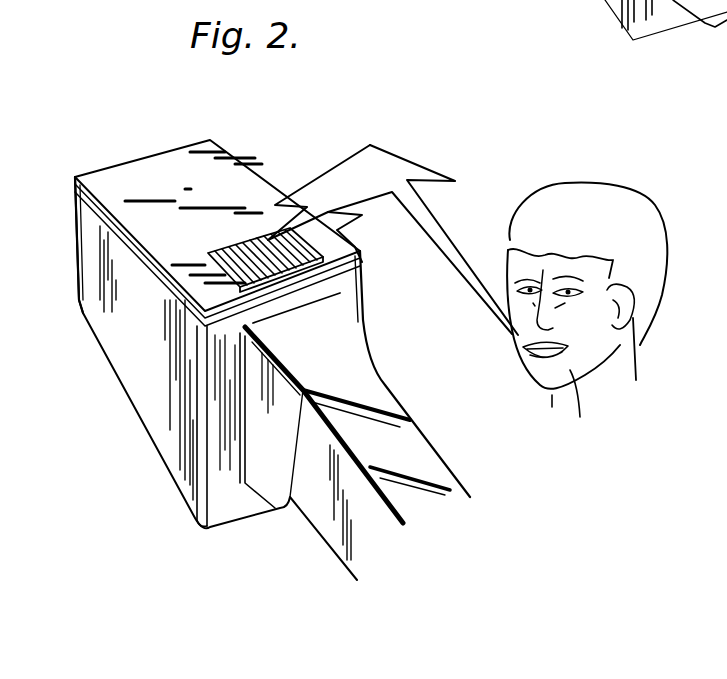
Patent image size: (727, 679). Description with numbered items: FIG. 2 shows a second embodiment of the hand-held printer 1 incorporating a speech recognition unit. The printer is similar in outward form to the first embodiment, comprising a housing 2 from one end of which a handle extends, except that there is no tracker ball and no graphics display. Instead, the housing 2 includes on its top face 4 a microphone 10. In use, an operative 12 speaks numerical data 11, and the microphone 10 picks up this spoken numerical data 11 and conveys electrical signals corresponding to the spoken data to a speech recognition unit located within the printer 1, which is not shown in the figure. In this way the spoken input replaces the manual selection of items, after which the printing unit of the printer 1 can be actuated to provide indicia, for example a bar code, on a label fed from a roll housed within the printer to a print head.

The hand-held printer 1 is at (138, 342).
The housing 2 is at (73, 213).
The top face 4 is at (142, 178).
The microphone 10 is at (250, 238).
The numerical data 11 is at (383, 158).
The operative 12 is at (580, 419).